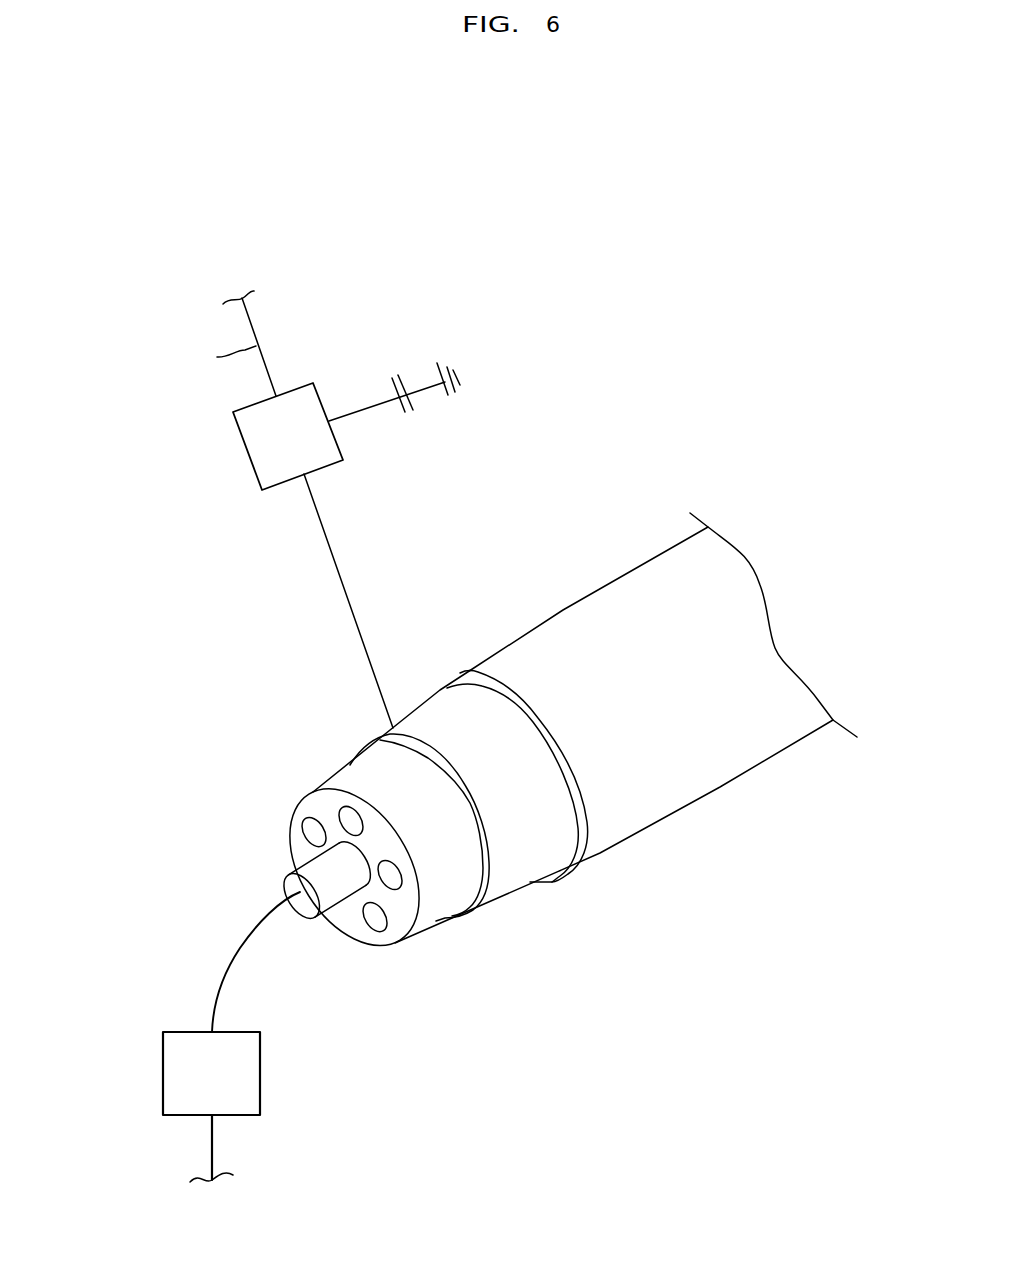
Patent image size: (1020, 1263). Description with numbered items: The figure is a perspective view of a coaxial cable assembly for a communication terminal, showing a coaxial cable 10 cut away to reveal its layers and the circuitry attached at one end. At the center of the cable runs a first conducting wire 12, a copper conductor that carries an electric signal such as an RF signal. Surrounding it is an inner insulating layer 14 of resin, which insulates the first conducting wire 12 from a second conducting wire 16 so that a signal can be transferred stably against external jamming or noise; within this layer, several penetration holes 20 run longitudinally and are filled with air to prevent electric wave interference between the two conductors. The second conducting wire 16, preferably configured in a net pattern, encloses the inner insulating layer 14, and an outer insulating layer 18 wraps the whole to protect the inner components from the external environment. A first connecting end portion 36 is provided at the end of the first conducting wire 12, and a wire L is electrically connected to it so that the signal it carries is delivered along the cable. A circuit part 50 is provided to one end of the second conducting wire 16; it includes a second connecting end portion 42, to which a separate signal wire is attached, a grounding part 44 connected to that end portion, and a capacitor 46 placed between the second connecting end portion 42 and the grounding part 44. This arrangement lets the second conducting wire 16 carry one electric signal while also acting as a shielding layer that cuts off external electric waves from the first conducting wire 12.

The coaxial cable 10 is at (517, 590).
The first conducting wire 12 is at (297, 887).
The inner insulating layer 14 is at (428, 909).
The second conducting wire 16 is at (527, 880).
The outer insulating layer 18 is at (661, 791).
The penetration holes 20 is at (373, 920).
The first connecting end portion 36 is at (163, 1076).
The second connecting end portion 42 is at (250, 458).
The grounding part 44 is at (449, 366).
The capacitor 46 is at (400, 377).
The circuit part 50 is at (380, 267).
The wire L is at (212, 1150).